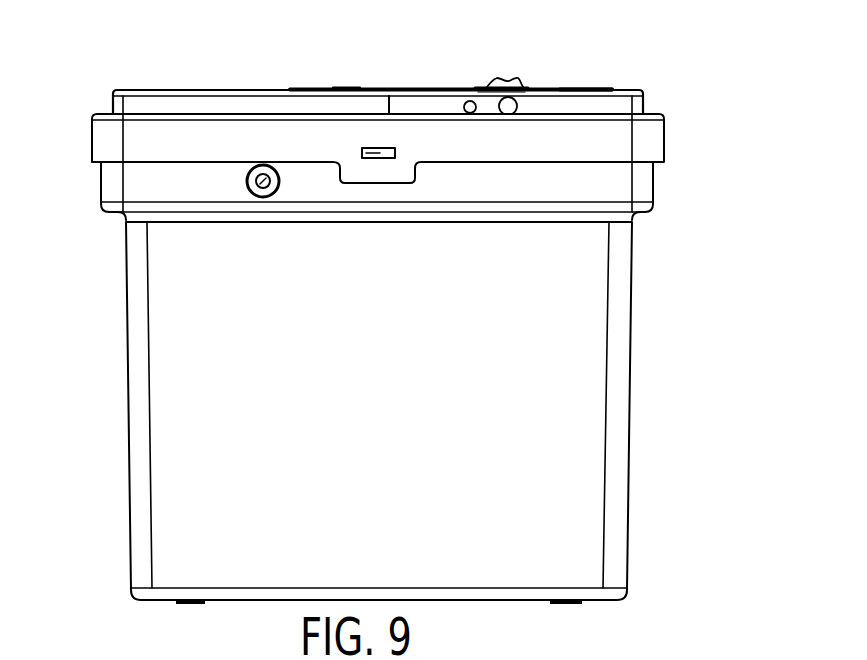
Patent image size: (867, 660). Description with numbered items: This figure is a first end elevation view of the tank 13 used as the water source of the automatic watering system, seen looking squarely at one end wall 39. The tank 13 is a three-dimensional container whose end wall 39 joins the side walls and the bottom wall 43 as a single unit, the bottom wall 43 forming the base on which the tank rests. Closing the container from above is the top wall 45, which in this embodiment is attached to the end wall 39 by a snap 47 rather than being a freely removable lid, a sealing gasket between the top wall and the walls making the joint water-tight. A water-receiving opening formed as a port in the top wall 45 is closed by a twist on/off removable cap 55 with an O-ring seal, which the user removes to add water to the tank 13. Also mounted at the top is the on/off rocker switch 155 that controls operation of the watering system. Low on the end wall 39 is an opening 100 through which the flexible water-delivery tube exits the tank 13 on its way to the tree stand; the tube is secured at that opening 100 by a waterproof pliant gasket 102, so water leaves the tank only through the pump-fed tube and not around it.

The tank 13 is at (127, 307).
The end wall 39 is at (583, 570).
The bottom wall 43 is at (235, 603).
The top wall 45 is at (228, 90).
The snap 47 is at (377, 158).
The removable cap 55 is at (570, 88).
The opening 100 is at (257, 194).
The waterproof pliant gasket 102 is at (279, 183).
The on/off rocker switch 155 is at (503, 78).